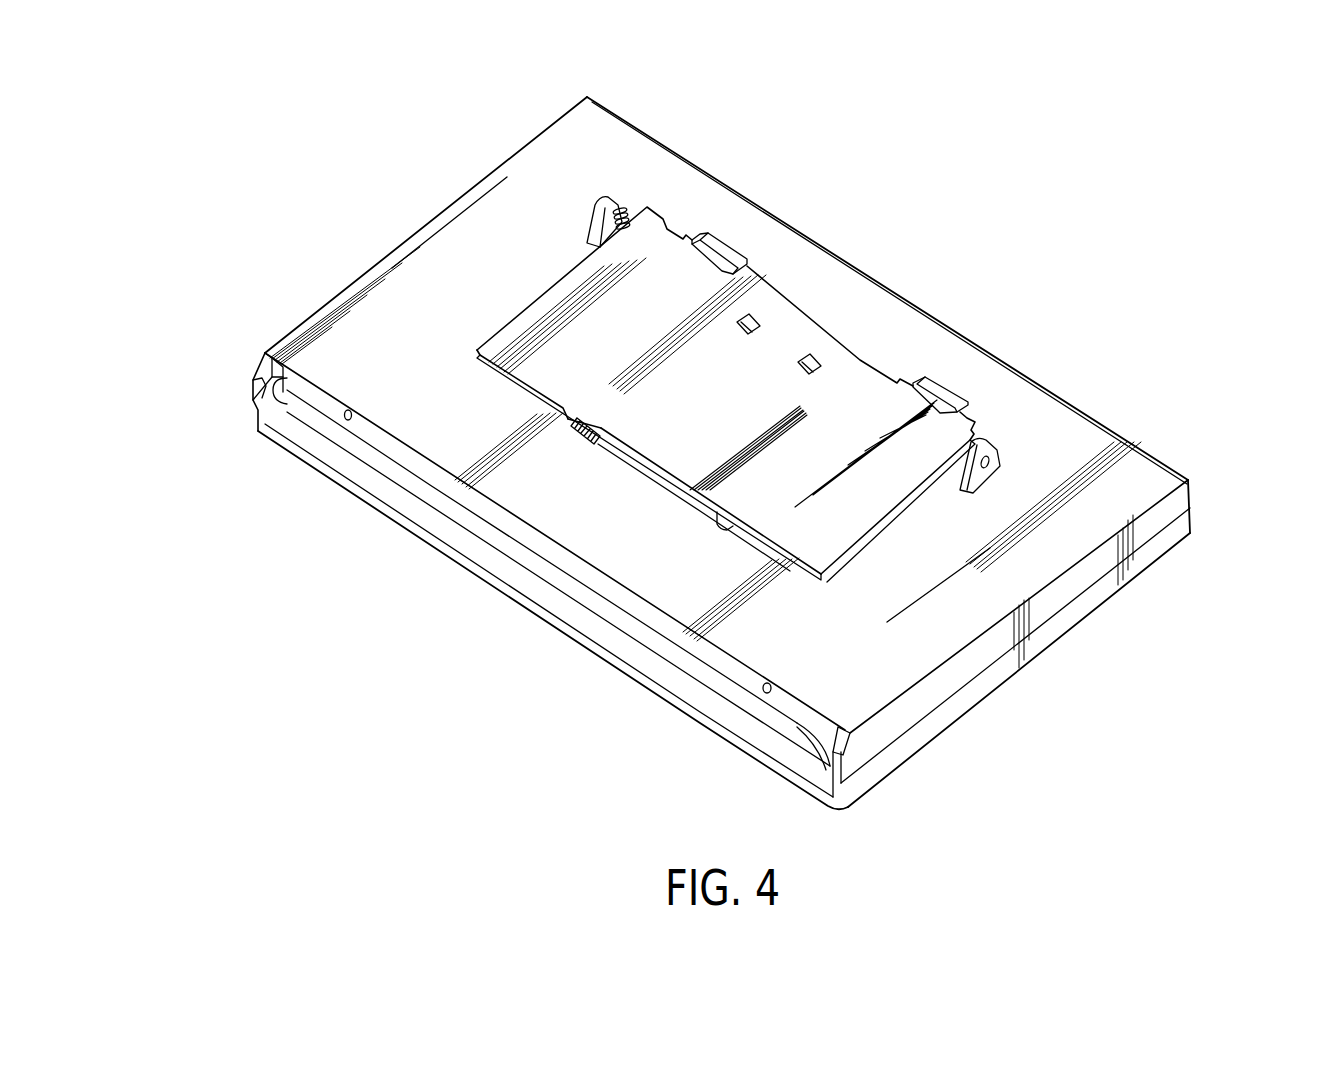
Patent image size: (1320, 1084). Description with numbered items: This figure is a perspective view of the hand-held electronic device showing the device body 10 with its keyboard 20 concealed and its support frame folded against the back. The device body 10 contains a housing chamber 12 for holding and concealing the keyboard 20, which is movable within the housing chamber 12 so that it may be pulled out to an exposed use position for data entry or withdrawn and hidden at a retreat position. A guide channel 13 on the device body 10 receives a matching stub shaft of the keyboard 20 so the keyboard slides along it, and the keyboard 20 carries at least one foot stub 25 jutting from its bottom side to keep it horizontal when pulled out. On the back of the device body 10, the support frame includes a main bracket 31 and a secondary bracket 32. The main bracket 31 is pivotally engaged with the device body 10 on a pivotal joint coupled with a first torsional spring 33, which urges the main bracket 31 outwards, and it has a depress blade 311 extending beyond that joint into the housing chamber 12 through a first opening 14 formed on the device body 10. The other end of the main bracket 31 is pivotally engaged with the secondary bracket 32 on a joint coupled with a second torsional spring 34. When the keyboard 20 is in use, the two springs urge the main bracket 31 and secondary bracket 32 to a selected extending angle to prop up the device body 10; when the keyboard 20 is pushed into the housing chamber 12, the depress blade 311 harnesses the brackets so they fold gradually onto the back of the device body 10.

The device body 10 is at (1110, 407).
The housing chamber 12 is at (360, 468).
The guide channel 13 is at (262, 393).
The first opening 14 is at (740, 264).
The keyboard 20 is at (543, 567).
The foot stub 25 is at (760, 688).
The main bracket 31 is at (803, 338).
The depress blade 311 is at (715, 248).
The secondary bracket 32 is at (670, 484).
The first torsional spring 33 is at (618, 196).
The second torsional spring 34 is at (573, 426).